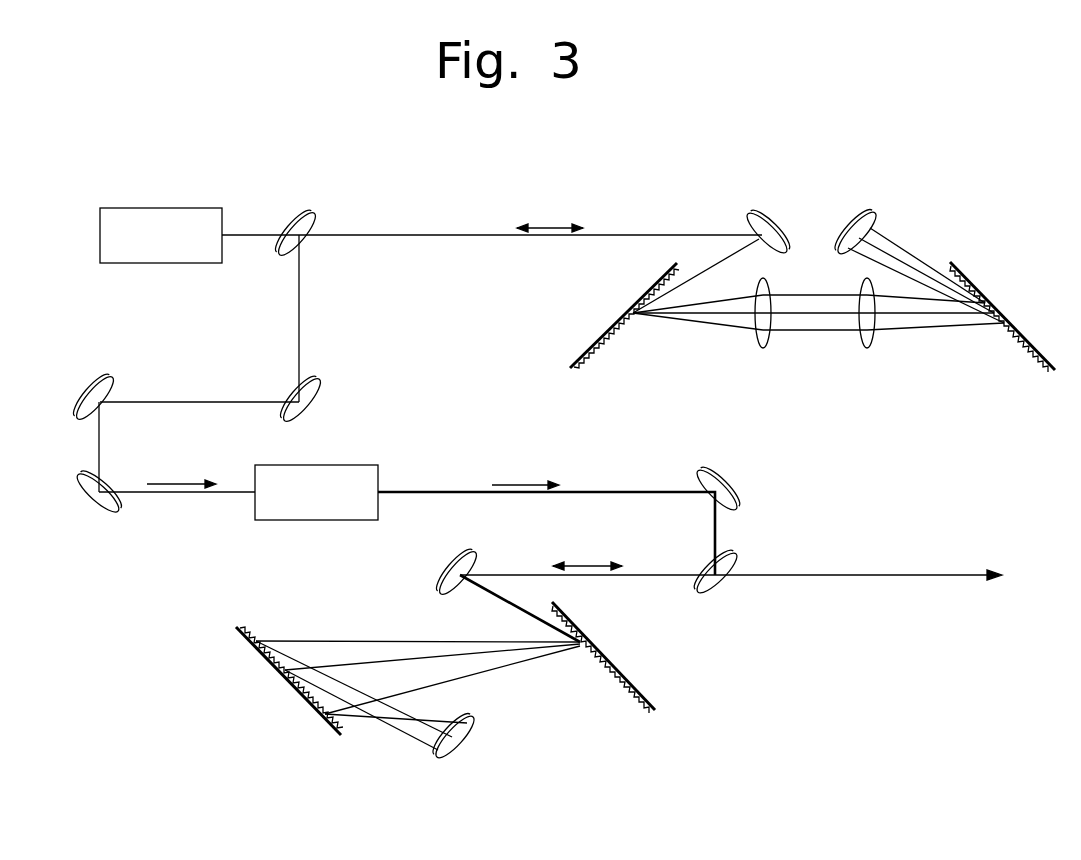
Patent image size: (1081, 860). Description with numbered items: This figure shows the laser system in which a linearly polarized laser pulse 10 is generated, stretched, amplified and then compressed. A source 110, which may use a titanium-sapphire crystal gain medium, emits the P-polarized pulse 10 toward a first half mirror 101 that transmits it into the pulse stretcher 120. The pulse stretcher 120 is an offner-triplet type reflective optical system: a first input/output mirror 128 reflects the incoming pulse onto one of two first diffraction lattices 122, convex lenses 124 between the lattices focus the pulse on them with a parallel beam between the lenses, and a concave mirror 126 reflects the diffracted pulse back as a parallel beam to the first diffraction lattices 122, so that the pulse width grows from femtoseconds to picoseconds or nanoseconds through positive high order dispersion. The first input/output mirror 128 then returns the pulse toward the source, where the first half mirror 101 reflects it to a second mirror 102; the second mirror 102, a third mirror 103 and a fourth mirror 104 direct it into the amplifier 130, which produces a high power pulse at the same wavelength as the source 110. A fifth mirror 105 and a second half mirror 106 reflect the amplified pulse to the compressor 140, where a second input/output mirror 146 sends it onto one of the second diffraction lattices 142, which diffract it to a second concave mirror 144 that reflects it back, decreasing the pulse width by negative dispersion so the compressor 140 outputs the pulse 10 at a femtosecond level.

The linearly polarized laser pulse 10 is at (430, 229).
The source 110 is at (190, 207).
The first half mirror 101 is at (312, 210).
The second mirror 102 is at (317, 378).
The third mirror 103 is at (101, 375).
The fourth mirror 104 is at (91, 511).
The fifth mirror 105 is at (728, 474).
The second half mirror 106 is at (725, 592).
The amplifier 130 is at (356, 463).
The pulse stretcher 120 is at (948, 197).
The first diffraction lattices 122 is at (625, 303).
The convex lenses 124 is at (763, 349).
The concave mirror 126 is at (870, 211).
The first input/output mirror 128 is at (752, 212).
The compressor 140 is at (657, 678).
The second diffraction lattices 142 is at (606, 651).
The second concave mirror 144 is at (462, 757).
The second input/output mirror 146 is at (454, 552).